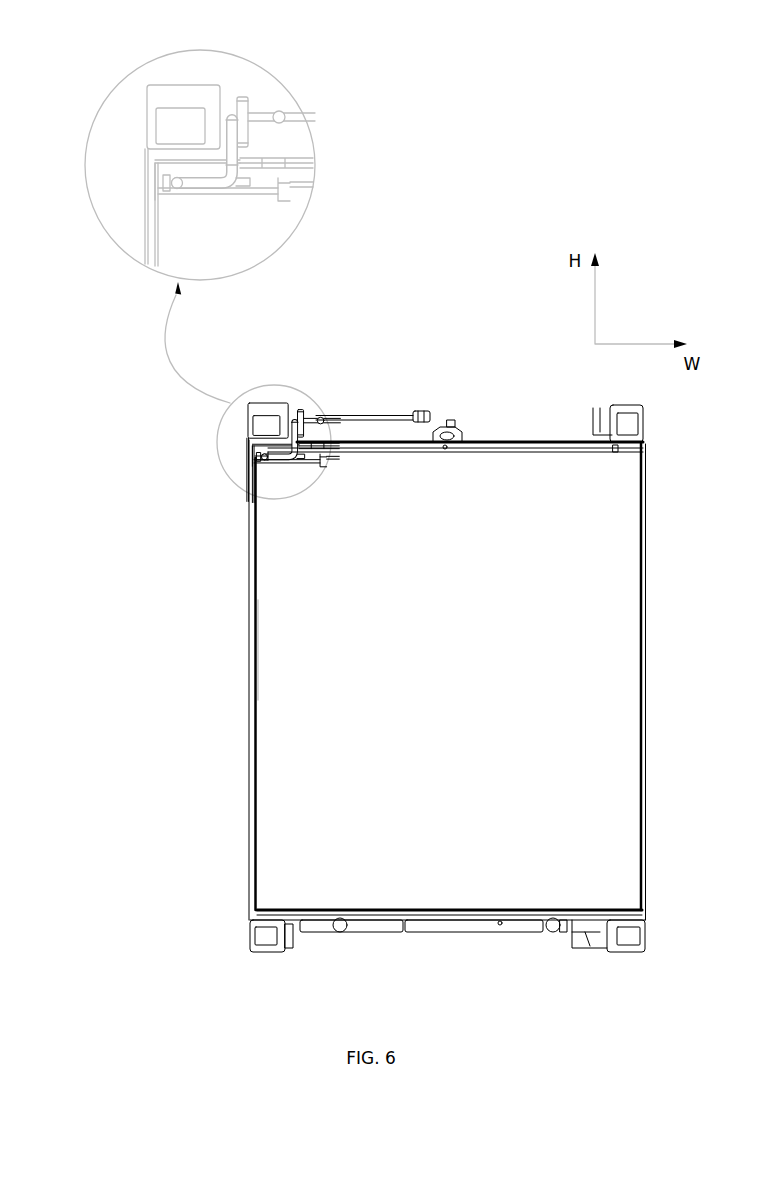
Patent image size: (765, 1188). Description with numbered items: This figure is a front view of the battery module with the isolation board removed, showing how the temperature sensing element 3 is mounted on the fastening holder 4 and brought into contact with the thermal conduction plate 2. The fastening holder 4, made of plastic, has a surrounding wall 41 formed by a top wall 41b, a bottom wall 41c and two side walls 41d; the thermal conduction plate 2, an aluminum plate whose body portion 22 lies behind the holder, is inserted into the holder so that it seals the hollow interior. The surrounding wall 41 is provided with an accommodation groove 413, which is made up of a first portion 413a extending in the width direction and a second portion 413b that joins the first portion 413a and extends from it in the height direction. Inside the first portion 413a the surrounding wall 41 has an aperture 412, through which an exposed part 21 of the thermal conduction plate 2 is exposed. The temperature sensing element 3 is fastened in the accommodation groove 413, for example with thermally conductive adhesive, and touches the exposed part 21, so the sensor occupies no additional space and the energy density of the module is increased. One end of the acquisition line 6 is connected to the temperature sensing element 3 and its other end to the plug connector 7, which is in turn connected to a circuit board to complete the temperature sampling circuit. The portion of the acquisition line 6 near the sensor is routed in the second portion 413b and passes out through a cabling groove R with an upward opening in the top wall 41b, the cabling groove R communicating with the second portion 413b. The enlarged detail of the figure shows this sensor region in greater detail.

The thermal conduction plate 2 is at (240, 581).
The exposed part 21 is at (157, 162).
The body portion 22 is at (265, 627).
The temperature sensing element 3 is at (205, 205).
The fastening holder 4 is at (356, 700).
The surrounding wall 41 is at (356, 700).
The top wall 41b is at (515, 440).
The bottom wall 41c is at (417, 934).
The side wall 41d is at (248, 731).
The aperture 412 is at (160, 196).
The accommodation groove 413 is at (213, 359).
The first portion 413a is at (242, 180).
The second portion 413b is at (276, 187).
The acquisition line 6 is at (358, 400).
The plug connector 7 is at (430, 398).
The cabling groove R is at (230, 68).